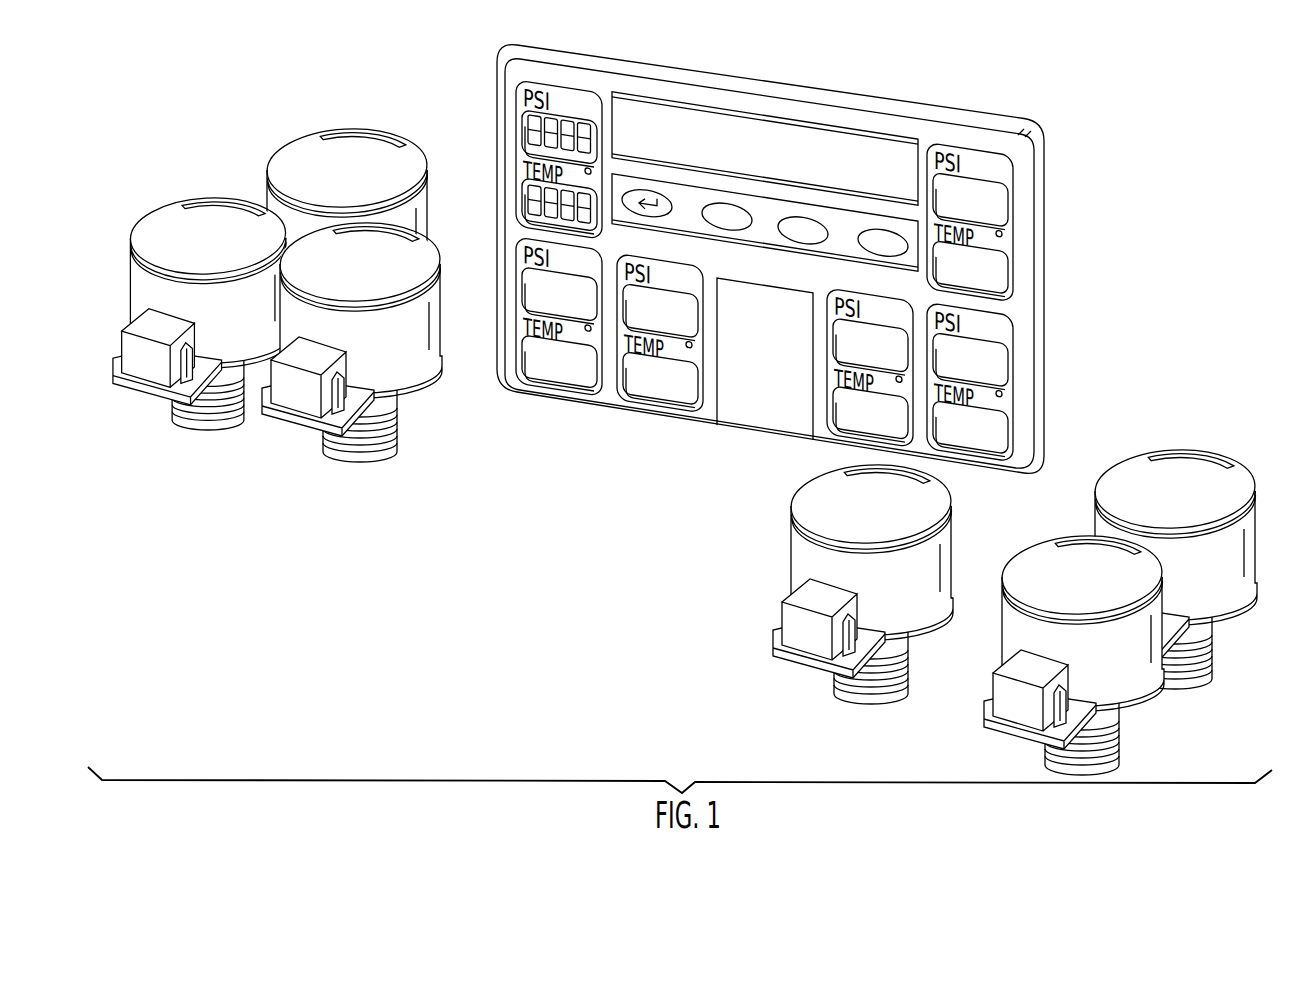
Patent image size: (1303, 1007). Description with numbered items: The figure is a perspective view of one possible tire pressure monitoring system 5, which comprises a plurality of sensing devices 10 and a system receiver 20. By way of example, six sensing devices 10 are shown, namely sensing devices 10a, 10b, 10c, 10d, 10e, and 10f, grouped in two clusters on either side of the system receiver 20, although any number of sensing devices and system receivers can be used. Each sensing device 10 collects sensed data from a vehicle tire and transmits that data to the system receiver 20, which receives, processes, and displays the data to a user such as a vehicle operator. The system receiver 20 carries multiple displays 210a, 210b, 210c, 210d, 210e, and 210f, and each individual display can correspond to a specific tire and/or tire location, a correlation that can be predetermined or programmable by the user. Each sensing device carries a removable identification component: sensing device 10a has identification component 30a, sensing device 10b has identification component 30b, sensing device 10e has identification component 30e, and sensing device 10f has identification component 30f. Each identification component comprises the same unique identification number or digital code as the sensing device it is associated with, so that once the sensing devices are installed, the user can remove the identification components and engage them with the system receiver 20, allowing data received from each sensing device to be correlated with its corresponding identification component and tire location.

The tire pressure monitoring system 5 is at (1146, 104).
The sensing devices 10 is at (295, 294).
The sensing device 10a is at (199, 295).
The sensing device 10b is at (371, 362).
The sensing device 10c is at (428, 186).
The sensing device 10d is at (1252, 509).
The sensing device 10e is at (1057, 643).
The sensing device 10f is at (844, 582).
The system receiver 20 is at (834, 82).
The identification component 30a is at (153, 378).
The identification component 30b is at (302, 402).
The identification component 30e is at (1015, 708).
The identification component 30f is at (797, 647).
The display 210a is at (517, 148).
The display 210b is at (520, 253).
The display 210c is at (678, 351).
The display 210d is at (1010, 228).
The display 210e is at (1005, 394).
The display 210f is at (830, 378).